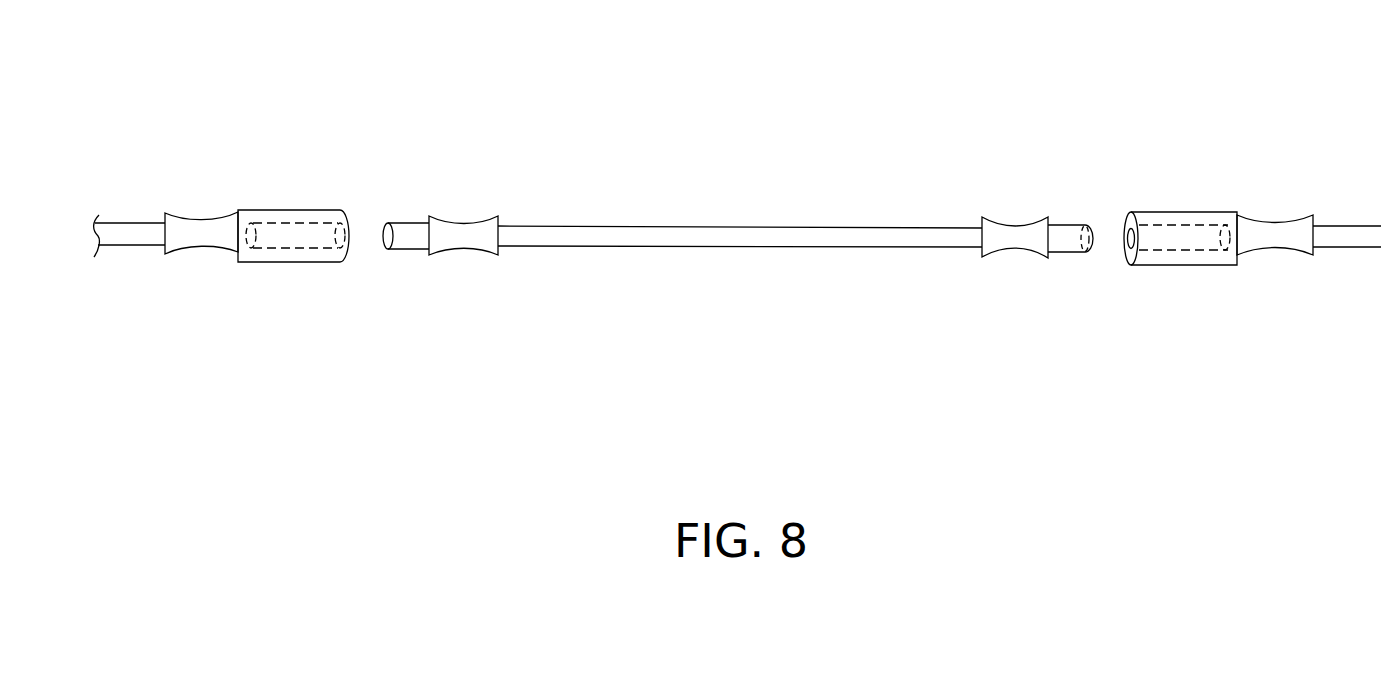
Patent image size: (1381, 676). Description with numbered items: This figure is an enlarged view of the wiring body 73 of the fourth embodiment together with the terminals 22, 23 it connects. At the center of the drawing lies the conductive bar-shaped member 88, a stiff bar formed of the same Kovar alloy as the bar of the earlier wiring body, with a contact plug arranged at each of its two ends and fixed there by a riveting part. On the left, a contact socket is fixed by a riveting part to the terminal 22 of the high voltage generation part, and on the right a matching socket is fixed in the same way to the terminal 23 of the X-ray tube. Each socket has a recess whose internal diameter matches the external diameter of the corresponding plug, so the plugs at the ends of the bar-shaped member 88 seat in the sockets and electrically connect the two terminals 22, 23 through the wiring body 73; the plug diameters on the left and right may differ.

The wiring body 73 is at (745, 93).
The terminal 22 is at (131, 236).
The terminal 23 is at (1340, 237).
The bar-shaped member 88 is at (737, 238).